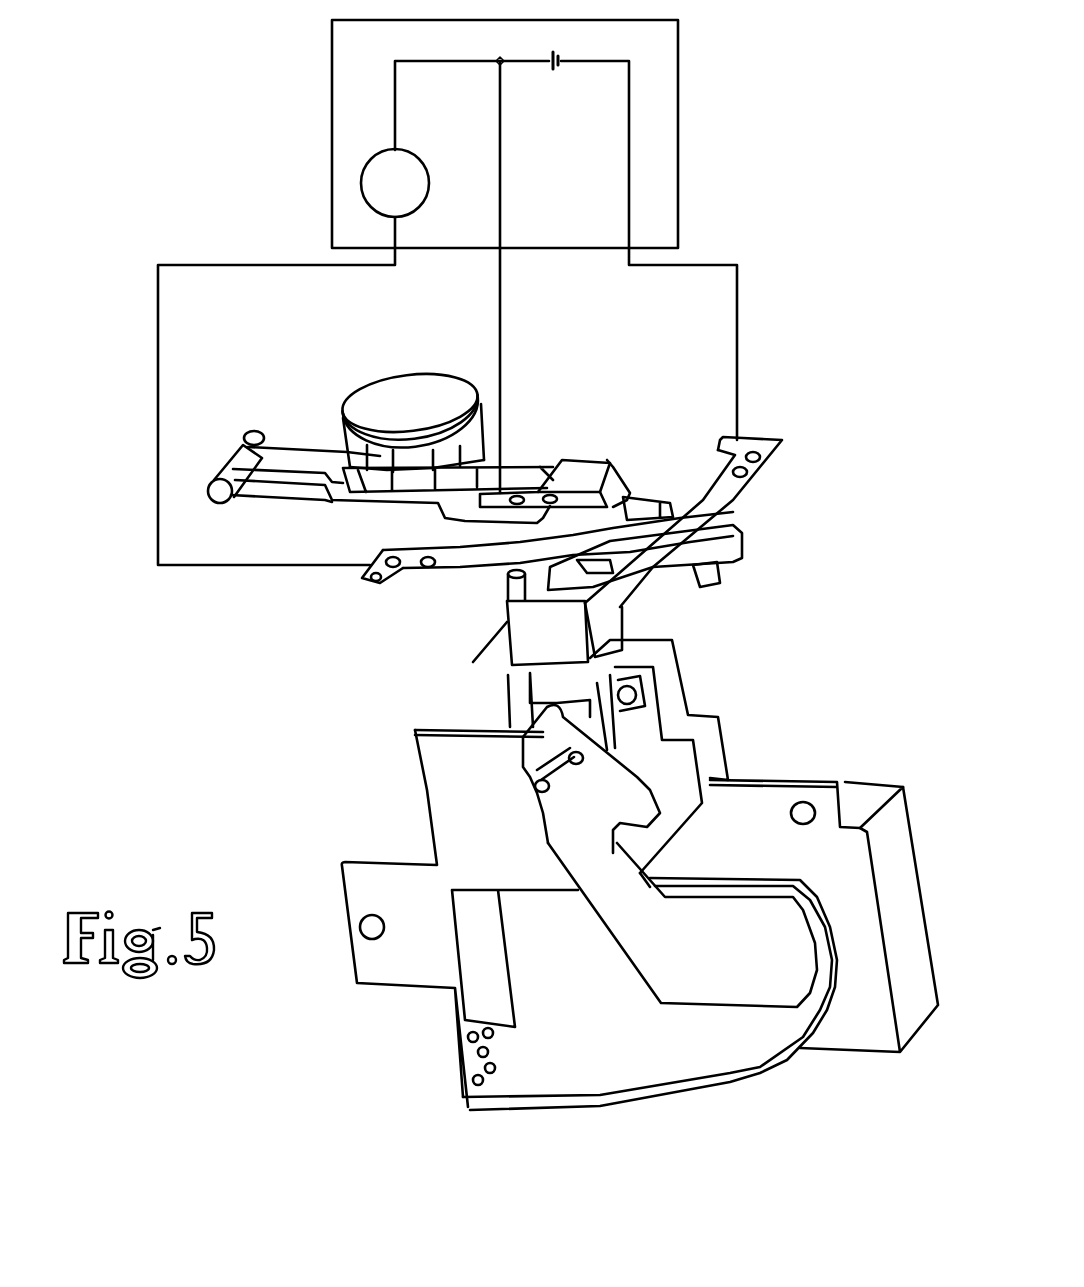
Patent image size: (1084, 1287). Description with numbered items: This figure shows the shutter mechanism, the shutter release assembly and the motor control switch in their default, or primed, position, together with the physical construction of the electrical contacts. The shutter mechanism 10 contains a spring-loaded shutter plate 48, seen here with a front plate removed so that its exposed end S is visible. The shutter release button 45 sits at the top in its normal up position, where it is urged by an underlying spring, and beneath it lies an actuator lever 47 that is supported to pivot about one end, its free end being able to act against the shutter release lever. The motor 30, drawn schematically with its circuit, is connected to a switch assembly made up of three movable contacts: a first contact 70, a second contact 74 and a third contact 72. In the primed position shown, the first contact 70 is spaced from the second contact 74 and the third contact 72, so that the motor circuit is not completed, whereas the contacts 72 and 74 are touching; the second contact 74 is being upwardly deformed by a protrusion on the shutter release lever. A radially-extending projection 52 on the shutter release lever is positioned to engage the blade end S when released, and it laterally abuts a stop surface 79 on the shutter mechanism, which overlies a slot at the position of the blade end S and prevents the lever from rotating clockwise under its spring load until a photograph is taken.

The motor 30 is at (361, 175).
The actuator lever 47 is at (250, 453).
The shutter release button 45 is at (388, 407).
The third contact 72 is at (580, 473).
The first contact 70 is at (782, 442).
The second contact 74 is at (357, 582).
The stop surface 79 is at (557, 660).
The projection 52 is at (507, 704).
The shutter mechanism 10 is at (410, 778).
The exposed end S is at (533, 738).
The shutter plate 48 is at (607, 883).